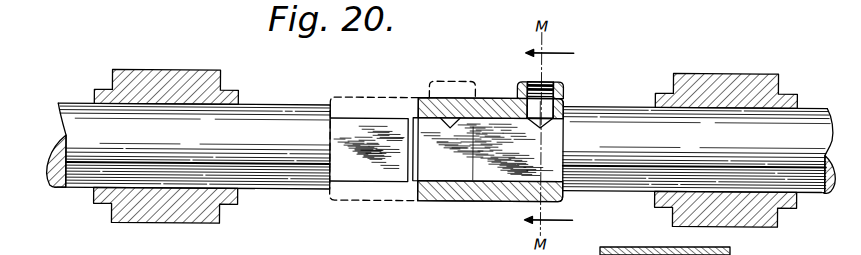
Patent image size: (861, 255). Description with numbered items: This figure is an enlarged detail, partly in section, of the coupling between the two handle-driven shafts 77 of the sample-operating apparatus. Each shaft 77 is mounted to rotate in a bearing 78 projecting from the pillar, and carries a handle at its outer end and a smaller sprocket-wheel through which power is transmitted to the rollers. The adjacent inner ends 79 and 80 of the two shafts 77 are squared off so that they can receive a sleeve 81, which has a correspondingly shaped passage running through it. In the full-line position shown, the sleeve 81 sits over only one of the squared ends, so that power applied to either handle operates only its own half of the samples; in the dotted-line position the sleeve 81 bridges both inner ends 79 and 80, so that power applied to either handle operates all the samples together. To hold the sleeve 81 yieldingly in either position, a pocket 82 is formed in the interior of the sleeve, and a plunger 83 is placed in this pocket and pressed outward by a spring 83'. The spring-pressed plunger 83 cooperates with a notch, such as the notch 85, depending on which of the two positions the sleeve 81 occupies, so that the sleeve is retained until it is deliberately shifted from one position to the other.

The shaft 77 is at (290, 104).
The bearing 78 is at (222, 71).
The inner end of shaft 79 is at (373, 170).
The inner end of shaft 80 is at (562, 190).
The sleeve 81 is at (487, 95).
The pocket 82 is at (564, 89).
The plunger 83 is at (532, 86).
The spring 83' is at (563, 93).
The notch 85 is at (430, 96).